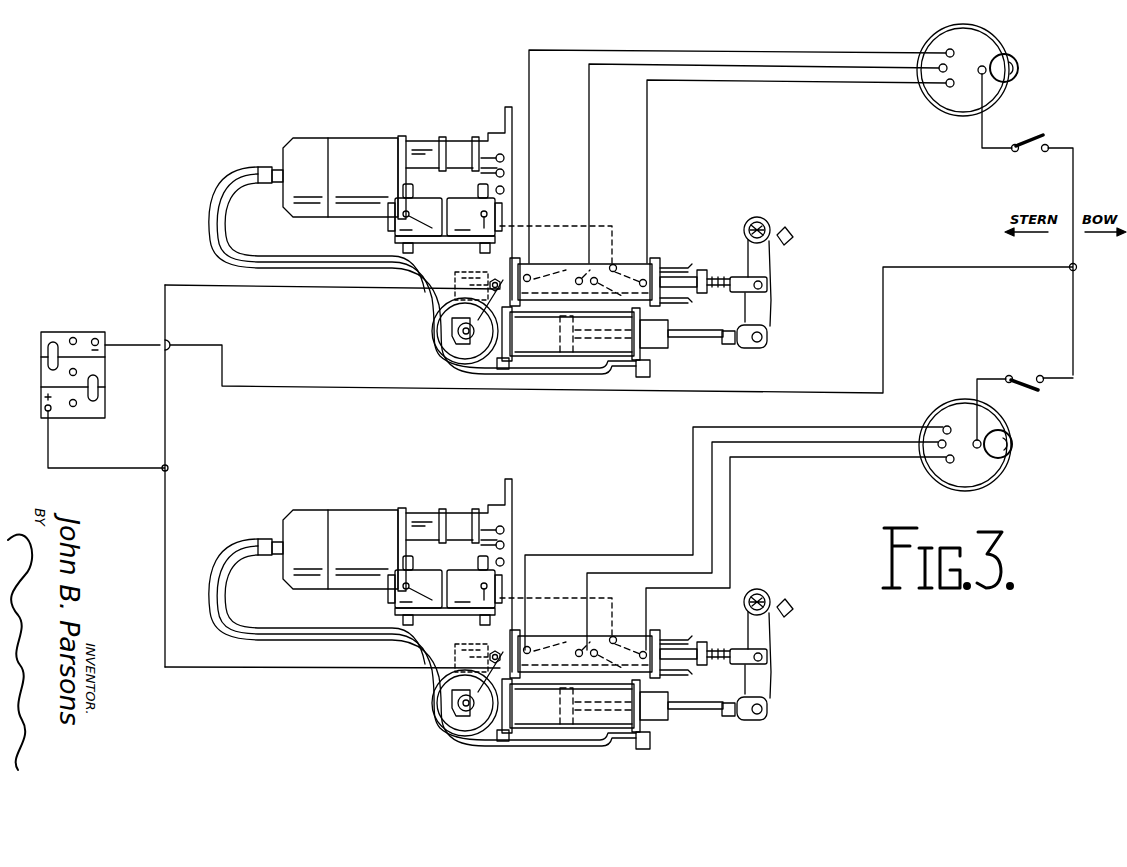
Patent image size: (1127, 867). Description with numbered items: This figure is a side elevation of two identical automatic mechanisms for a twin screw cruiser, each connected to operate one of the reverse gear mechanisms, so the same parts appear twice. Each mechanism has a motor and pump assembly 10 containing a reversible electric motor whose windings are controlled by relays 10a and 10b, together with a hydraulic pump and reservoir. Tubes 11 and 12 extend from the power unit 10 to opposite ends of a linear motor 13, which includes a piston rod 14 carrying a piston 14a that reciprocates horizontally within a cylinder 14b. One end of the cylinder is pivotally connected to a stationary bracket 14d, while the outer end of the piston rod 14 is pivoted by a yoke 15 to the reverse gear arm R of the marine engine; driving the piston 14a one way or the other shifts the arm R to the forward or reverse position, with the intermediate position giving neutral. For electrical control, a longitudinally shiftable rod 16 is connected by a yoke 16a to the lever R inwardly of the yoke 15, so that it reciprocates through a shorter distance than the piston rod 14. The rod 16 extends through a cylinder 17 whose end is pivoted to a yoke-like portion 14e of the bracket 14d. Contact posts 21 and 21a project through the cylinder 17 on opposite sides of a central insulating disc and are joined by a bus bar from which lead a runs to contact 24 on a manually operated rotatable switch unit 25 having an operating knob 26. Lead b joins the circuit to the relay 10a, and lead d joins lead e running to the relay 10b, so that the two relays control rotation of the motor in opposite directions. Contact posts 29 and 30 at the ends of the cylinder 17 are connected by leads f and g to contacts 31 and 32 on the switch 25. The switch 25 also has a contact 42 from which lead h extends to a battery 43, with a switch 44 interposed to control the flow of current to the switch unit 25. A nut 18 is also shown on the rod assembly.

The motor and pump assembly 10 is at (330, 138).
The relay 10a is at (395, 225).
The relay 10b is at (476, 200).
The tube 11 is at (310, 287).
The tube 12 is at (322, 254).
The linear motor 13 is at (660, 312).
The piston rod 14 is at (700, 338).
The piston 14a is at (570, 508).
The cylinder 14b is at (534, 517).
The bracket 14d is at (455, 290).
The yoke-like portion 14e is at (445, 350).
The yoke 15 is at (742, 267).
The longitudinally shiftable rod 16 is at (686, 270).
The yoke 16a is at (772, 644).
The cylinder 17 is at (652, 275).
The nut 18 is at (482, 264).
The contact post 21 is at (596, 278).
The contact post 21a is at (578, 276).
The contact 24 is at (940, 70).
The rotatable switch unit 25 is at (1014, 101).
The operating knob 26 is at (1018, 65).
The contact post 29 is at (660, 262).
The contact post 30 is at (532, 264).
The contact 31 is at (950, 87).
The contact 32 is at (949, 50).
The contact 42 is at (985, 64).
The battery 43 is at (95, 332).
The switch 44 is at (1050, 140).
The reverse gear arm R is at (775, 300).
The lead a is at (590, 165).
The lead b is at (546, 273).
The lead d is at (642, 280).
The lead e is at (612, 393).
The lead f is at (648, 170).
The lead g is at (532, 163).
The lead h is at (1075, 182).